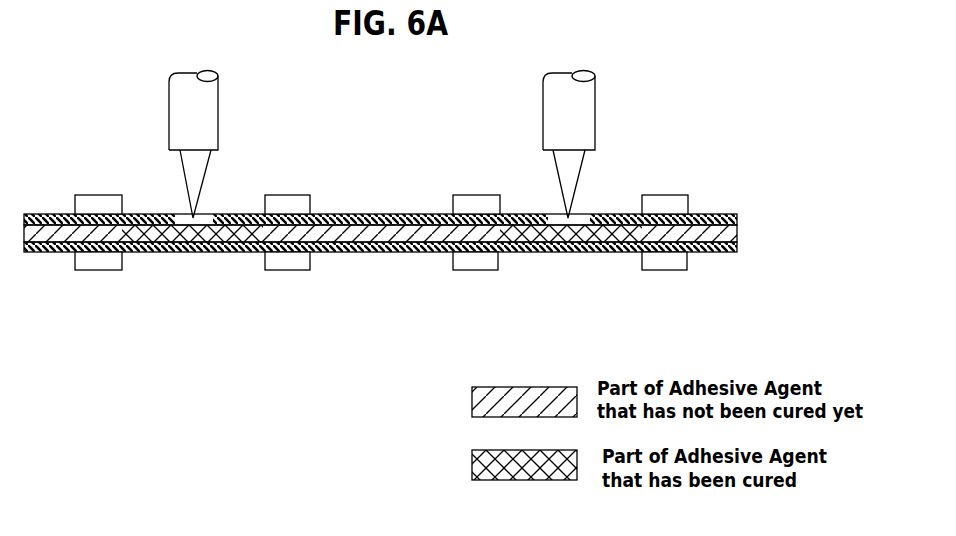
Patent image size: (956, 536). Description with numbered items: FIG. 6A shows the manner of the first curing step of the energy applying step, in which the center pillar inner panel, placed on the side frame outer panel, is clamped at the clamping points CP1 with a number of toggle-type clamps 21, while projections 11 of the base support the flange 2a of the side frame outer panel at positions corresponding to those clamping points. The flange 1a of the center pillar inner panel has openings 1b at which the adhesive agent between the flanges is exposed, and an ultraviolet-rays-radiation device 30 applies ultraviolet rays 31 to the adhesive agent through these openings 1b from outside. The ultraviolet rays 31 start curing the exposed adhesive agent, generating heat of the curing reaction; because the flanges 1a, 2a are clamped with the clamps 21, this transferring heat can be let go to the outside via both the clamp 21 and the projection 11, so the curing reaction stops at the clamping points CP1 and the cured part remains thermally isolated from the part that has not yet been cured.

The flange 1a is at (522, 215).
The opening 1b is at (192, 215).
The flange 2a is at (532, 250).
The toggle-type clamp 21 is at (100, 195).
The projection 11 is at (99, 270).
The ultraviolet-rays-radiation device 30 is at (218, 110).
The ultraviolet rays 31 is at (202, 188).